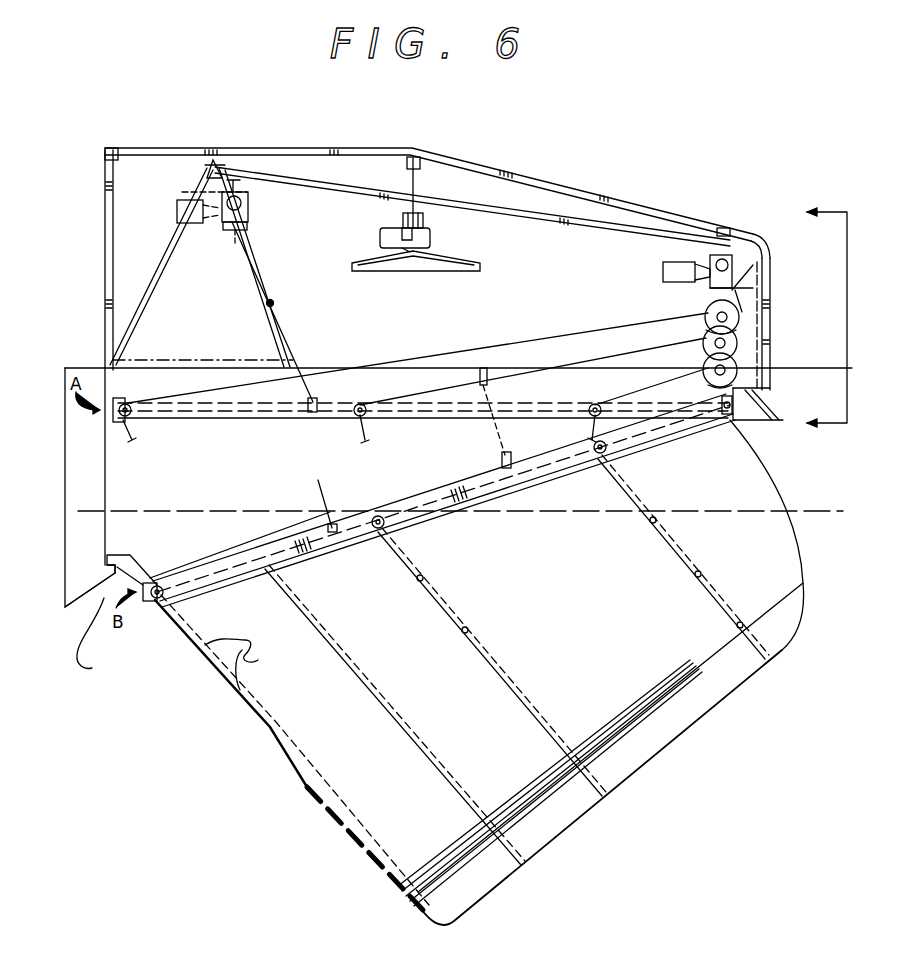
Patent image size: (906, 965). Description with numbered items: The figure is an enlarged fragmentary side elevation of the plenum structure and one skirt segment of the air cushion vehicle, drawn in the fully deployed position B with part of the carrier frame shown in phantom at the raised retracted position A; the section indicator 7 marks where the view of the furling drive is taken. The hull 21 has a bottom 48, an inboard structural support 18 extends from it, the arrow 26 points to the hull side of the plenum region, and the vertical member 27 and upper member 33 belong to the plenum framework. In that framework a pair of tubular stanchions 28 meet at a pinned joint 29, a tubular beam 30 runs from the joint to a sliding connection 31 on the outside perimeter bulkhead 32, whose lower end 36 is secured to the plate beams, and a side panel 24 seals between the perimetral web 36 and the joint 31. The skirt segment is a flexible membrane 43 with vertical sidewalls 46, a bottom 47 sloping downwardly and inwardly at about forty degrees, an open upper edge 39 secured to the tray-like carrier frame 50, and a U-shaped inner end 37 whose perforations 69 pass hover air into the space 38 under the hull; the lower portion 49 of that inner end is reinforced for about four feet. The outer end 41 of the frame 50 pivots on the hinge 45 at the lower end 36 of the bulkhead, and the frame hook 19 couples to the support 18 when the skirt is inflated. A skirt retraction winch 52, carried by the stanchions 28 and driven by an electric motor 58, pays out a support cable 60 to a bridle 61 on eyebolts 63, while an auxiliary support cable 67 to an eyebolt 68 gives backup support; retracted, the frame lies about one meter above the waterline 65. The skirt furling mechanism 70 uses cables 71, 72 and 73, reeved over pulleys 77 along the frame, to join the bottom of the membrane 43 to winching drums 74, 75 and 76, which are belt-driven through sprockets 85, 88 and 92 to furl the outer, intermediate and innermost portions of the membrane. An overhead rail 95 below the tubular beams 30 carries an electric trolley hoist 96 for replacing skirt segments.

The section line 7- 7 is at (826, 305).
The inboard structural support 18 is at (108, 578).
The hook 19 is at (126, 556).
The hull 21 is at (106, 476).
The side panel 24 is at (772, 268).
The frame 26 is at (78, 358).
The front post 27 is at (105, 212).
The tubular stanchions 28 is at (162, 263).
The pinned joint 29 is at (205, 176).
The tubular beam 30 is at (360, 191).
The sliding joint 31 is at (772, 244).
The outside perimeter bulkhead 32 is at (764, 292).
The top rail 33 is at (170, 150).
The lower end of bulkhead 36 is at (758, 398).
The inner end 37 is at (248, 203).
The space under the vehicle 38 is at (134, 608).
The upper edge 39 is at (217, 545).
The outer end of frame 41 is at (725, 428).
The flexible membrane 43 is at (806, 556).
The hinge 45 is at (748, 422).
The vertical sidewalls 46 is at (665, 748).
The bottom of segment 47 is at (735, 678).
The bottom of the hull 48 is at (90, 637).
The lower portion of inner end 49 is at (362, 834).
The segment carrier frame 50 is at (232, 425).
The skirt retraction winch 52 is at (272, 217).
The electric motor 58 is at (177, 210).
The support cable 60 is at (270, 282).
The bridle 61 is at (285, 322).
The eyebolts 63 is at (318, 400).
The waterline 65 is at (826, 511).
The auxiliary support cable 67 is at (475, 426).
The eyebolt 68 is at (503, 396).
The perforations 69 is at (365, 715).
The skirt furling mechanism 70 is at (645, 297).
The cables 71 is at (638, 398).
The cables 72 is at (410, 397).
The cables 73 is at (185, 402).
The winching drums 74 is at (738, 372).
The winching drums 75 is at (738, 343).
The winching drums 76 is at (739, 318).
The pulleys 77 is at (136, 398).
The sprocket 85 is at (716, 386).
The sprocket 88 is at (704, 330).
The sprocket 92 is at (710, 307).
The overhead rail 95 is at (424, 224).
The electric trolley hoist 96 is at (432, 238).